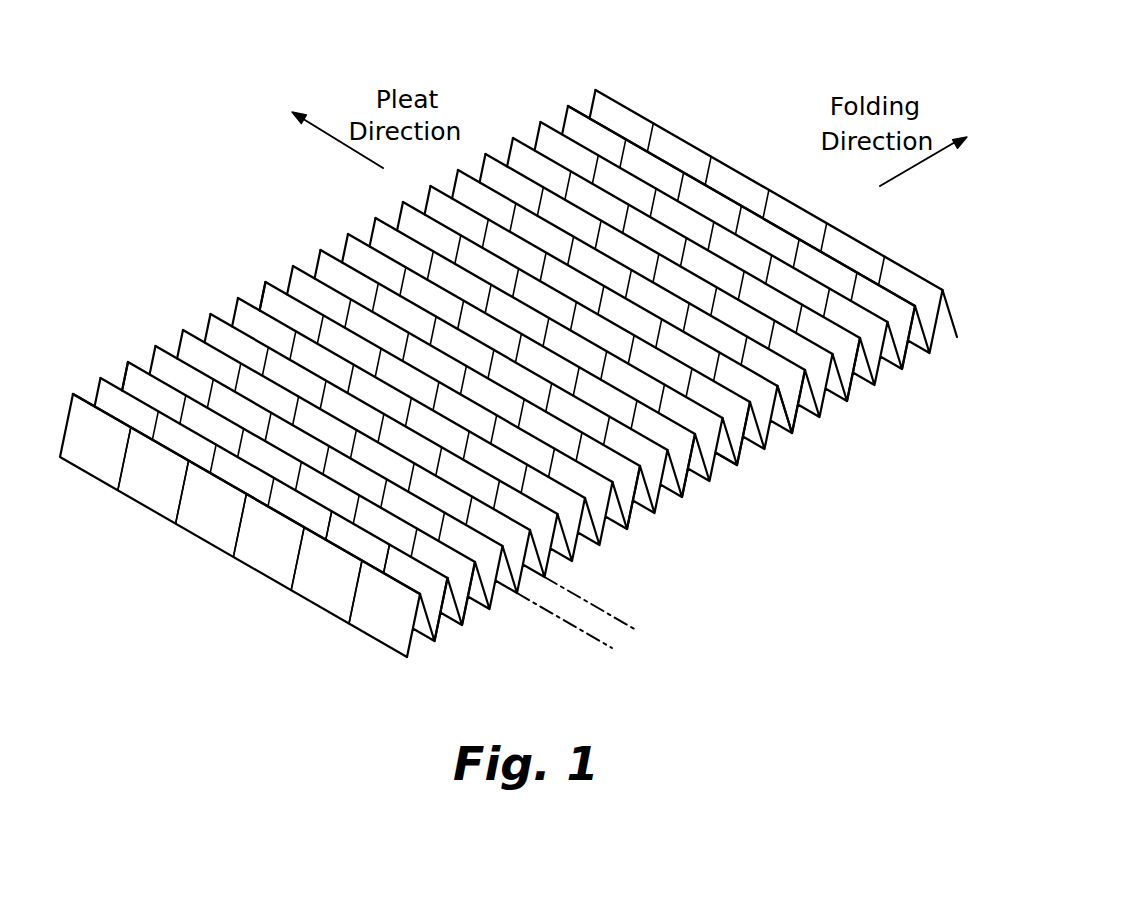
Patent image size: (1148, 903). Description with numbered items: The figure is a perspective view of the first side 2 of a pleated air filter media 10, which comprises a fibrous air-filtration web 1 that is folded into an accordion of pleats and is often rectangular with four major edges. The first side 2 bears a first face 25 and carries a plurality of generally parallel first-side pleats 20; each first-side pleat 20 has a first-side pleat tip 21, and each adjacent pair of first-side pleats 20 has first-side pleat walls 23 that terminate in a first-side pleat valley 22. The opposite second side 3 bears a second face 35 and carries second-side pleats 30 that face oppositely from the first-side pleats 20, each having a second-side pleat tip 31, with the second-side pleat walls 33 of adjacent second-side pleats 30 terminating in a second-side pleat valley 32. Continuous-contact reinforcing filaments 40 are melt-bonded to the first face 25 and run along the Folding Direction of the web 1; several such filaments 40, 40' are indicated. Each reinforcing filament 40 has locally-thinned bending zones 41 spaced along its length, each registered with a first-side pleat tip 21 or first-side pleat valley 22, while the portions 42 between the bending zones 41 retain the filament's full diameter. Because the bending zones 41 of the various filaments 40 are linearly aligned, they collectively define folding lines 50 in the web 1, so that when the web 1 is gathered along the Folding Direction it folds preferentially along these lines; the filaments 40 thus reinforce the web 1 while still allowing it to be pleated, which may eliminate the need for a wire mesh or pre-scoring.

The pleated air filter media 10 is at (732, 58).
The fibrous air-filtration web 1 is at (893, 293).
The first side 2 is at (260, 238).
The second side 3 is at (812, 512).
The first-side pleat 20 is at (470, 597).
The first-side pleat tip 21 is at (418, 596).
The first-side pleat valley 22 is at (434, 641).
The first-side pleat walls 23 is at (632, 476).
The first face 25 is at (133, 375).
The second-side pleat 30 is at (735, 465).
The second-side pleat tip 31 is at (700, 480).
The second-side pleat valley 32 is at (803, 373).
The second-side pleat walls 33 is at (853, 403).
The second face 35 is at (916, 338).
The continuous-contact reinforcing filament 40 is at (284, 582).
The transverse fold line 40' is at (220, 556).
The locally-thinned bending zone 41 is at (389, 545).
The portion of reinforcing filament that is not a locally-thinned bending zone 42 is at (122, 455).
The folding line 50 is at (638, 631).